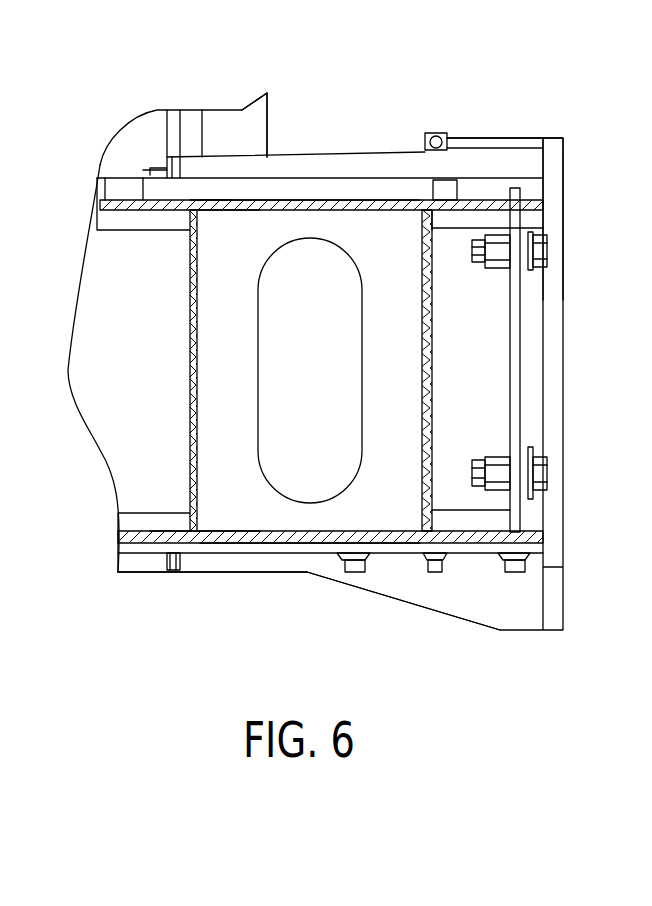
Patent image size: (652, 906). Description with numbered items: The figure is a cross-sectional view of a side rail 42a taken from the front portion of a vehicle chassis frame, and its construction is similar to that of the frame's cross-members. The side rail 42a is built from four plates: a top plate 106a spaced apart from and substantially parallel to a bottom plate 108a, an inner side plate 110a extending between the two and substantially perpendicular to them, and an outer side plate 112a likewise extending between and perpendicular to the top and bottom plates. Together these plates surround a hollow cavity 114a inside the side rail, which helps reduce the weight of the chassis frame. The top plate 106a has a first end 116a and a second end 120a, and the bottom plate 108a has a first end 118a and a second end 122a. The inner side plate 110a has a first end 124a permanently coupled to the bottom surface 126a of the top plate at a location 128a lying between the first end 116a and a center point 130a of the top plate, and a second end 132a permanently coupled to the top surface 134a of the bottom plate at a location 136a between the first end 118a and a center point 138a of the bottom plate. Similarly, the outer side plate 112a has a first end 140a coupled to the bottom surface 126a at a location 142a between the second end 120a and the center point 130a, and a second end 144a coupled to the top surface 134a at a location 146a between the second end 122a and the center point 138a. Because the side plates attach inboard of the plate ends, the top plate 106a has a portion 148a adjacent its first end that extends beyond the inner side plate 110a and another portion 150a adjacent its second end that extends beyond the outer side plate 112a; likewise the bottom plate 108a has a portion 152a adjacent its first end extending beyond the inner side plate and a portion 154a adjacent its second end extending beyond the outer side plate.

The side rail 42a is at (216, 657).
The top plate 106a is at (365, 199).
The bottom plate 108a is at (283, 544).
The inner side plate 110a is at (190, 336).
The outer side plate 112a is at (428, 385).
The hollow cavity 114a is at (350, 504).
The first end of the top plate 116a is at (447, 207).
The first end of the bottom plate 118a is at (450, 538).
The second end of the top plate 120a is at (172, 206).
The second end of the bottom plate 122a is at (153, 533).
The first end of the inner side plate 124a is at (240, 112).
The bottom surface of the top plate 126a is at (250, 213).
The location 128a is at (240, 112).
The center point of the top plate 130a is at (329, 200).
The second end of the inner side plate 132a is at (190, 532).
The top surface of the bottom plate 134a is at (240, 531).
The location 136a is at (190, 540).
The center point of the bottom plate 138a is at (321, 545).
The first end of the outer side plate 140a is at (428, 212).
The location 142a is at (427, 222).
The second end of the outer side plate 144a is at (430, 533).
The location 146a is at (427, 545).
The portion of the top plate 148a is at (190, 200).
The portion of the top plate 150a is at (440, 203).
The portion of the bottom plate 152a is at (178, 572).
The portion of the bottom plate 154a is at (447, 540).